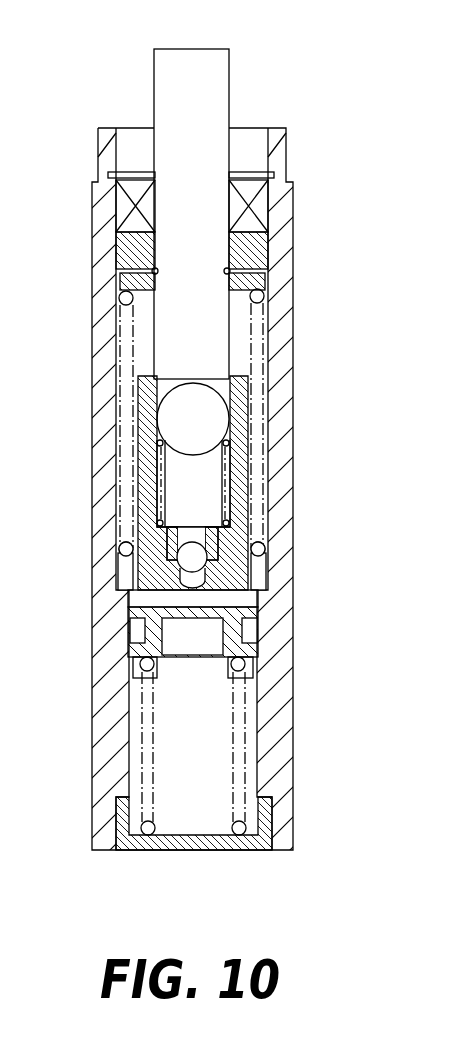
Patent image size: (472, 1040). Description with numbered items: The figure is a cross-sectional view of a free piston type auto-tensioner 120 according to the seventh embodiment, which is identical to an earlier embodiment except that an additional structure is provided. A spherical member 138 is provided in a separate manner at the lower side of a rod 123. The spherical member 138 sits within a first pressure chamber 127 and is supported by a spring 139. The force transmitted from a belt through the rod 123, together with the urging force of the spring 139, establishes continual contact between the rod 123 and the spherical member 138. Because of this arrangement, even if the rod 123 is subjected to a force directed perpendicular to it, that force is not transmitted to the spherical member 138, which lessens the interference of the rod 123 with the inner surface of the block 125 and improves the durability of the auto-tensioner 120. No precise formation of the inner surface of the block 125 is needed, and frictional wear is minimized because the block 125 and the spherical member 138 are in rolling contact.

The auto-tensioner 120 is at (275, 91).
The rod 123 is at (168, 93).
The block 125 is at (235, 403).
The first pressure chamber 127 is at (205, 495).
The spherical member 138 is at (162, 412).
The spring 139 is at (158, 490).